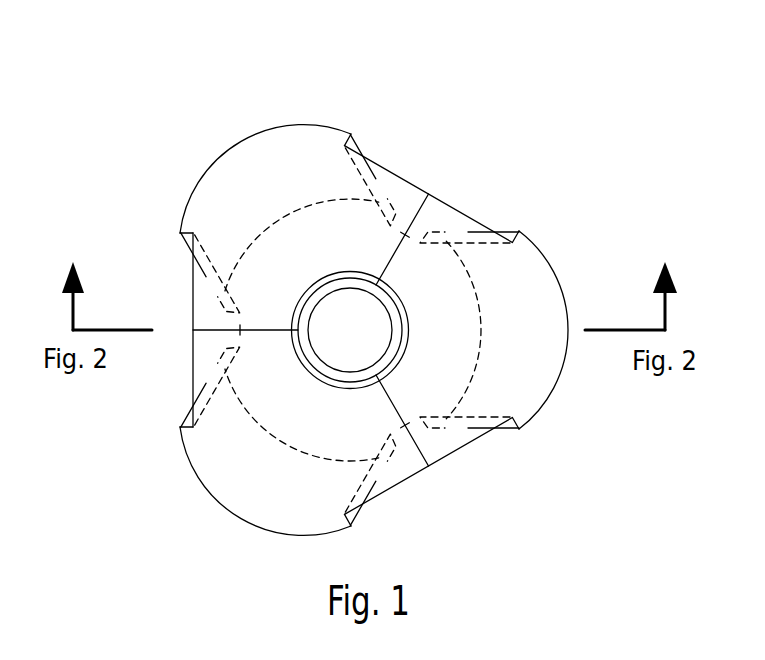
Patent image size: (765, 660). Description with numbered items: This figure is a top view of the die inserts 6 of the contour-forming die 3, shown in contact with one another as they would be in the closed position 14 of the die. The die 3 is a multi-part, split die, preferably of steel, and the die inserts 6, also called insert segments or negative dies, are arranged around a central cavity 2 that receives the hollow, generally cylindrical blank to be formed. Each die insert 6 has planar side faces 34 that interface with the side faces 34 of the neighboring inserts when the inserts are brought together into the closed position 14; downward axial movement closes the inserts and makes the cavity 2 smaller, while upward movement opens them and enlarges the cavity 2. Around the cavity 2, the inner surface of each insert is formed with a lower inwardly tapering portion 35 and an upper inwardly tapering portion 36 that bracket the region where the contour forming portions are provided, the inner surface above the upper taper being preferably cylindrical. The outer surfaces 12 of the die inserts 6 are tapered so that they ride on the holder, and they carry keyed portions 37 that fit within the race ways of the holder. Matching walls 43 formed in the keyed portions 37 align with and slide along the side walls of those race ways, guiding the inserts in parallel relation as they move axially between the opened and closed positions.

The cavity 2 is at (360, 328).
The contour-forming die 3 is at (166, 148).
The die inserts 6 is at (414, 180).
The outer surfaces 12 is at (488, 229).
The closed position 14 is at (579, 211).
The planar side faces 34 is at (442, 204).
The lower inwardly tapering portion 35 is at (314, 356).
The upper inwardly tapering portion 36 is at (315, 378).
The keyed portions 37 is at (300, 122).
The matching walls 43 is at (360, 136).